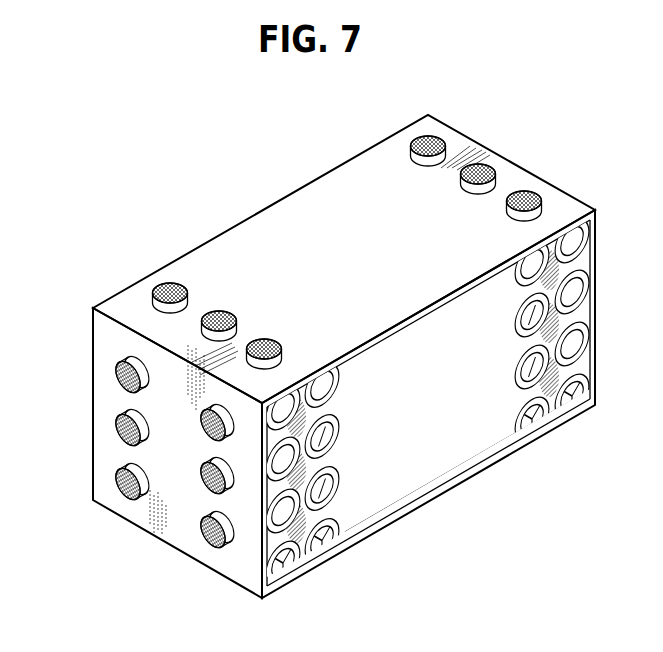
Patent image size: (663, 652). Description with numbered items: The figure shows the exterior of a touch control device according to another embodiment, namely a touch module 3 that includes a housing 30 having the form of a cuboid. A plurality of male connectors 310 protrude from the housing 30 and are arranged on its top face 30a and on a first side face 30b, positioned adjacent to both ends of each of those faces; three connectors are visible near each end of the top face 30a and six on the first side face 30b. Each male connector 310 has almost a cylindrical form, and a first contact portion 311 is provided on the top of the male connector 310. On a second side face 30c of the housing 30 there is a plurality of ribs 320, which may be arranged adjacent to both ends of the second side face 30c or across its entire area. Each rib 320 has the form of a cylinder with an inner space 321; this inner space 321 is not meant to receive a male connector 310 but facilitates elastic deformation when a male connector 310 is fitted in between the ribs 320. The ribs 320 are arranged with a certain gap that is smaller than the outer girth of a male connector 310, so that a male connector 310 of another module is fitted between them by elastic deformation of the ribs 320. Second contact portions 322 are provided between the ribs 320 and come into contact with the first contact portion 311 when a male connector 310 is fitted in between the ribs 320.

The touch module 3 is at (74, 273).
The housing 30 is at (293, 197).
The top face 30a is at (367, 172).
The first side face 30b is at (182, 540).
The second side face 30c is at (435, 457).
The male connector 310 is at (188, 303).
The first contact portion 311 is at (172, 283).
The rib 320 is at (340, 424).
The inner space 321 is at (322, 436).
The second contact portion 322 is at (305, 469).